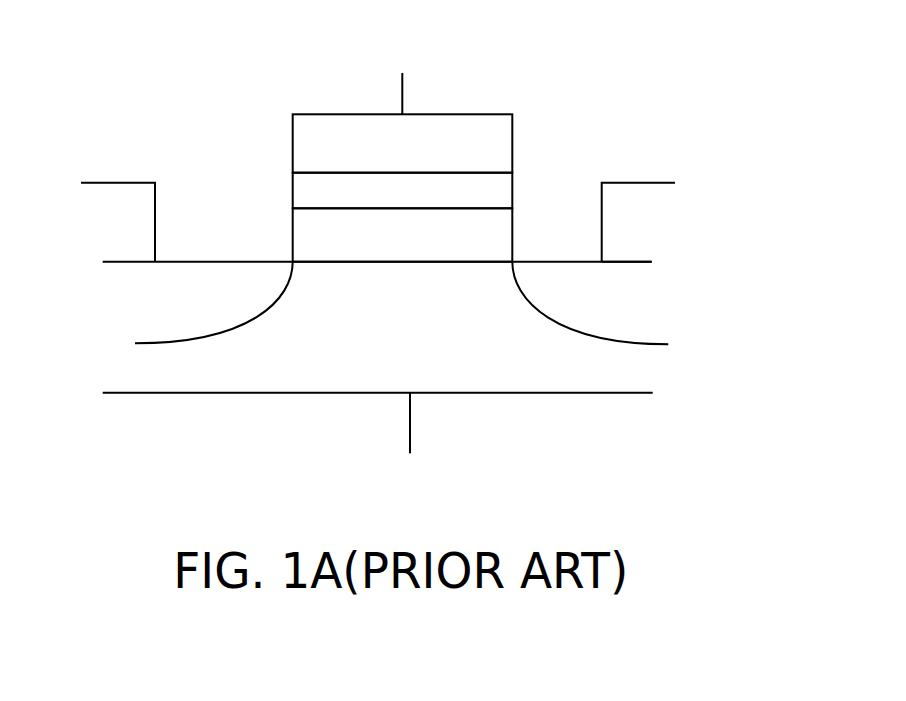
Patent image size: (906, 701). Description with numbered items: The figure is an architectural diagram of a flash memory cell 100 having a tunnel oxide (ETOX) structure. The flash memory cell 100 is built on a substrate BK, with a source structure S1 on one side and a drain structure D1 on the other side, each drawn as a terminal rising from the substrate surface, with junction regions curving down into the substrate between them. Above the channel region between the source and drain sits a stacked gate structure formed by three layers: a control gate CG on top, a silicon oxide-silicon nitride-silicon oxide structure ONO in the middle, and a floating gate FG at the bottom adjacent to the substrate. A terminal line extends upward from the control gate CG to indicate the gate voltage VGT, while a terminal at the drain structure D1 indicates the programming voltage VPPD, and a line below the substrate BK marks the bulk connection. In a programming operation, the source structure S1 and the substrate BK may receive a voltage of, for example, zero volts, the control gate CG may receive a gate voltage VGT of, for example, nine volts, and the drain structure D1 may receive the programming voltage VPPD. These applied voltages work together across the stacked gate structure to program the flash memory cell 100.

The flash memory cell 100 is at (772, 512).
The control gate CG is at (502, 141).
The silicon oxide-silicon nitride-silicon oxide structure ONO is at (502, 193).
The floating gate FG is at (502, 237).
The gate voltage VGT is at (403, 75).
The source structure S1 is at (143, 283).
The drain structure D1 is at (621, 278).
The programming voltage VPPD is at (671, 213).
The substrate BK is at (378, 402).